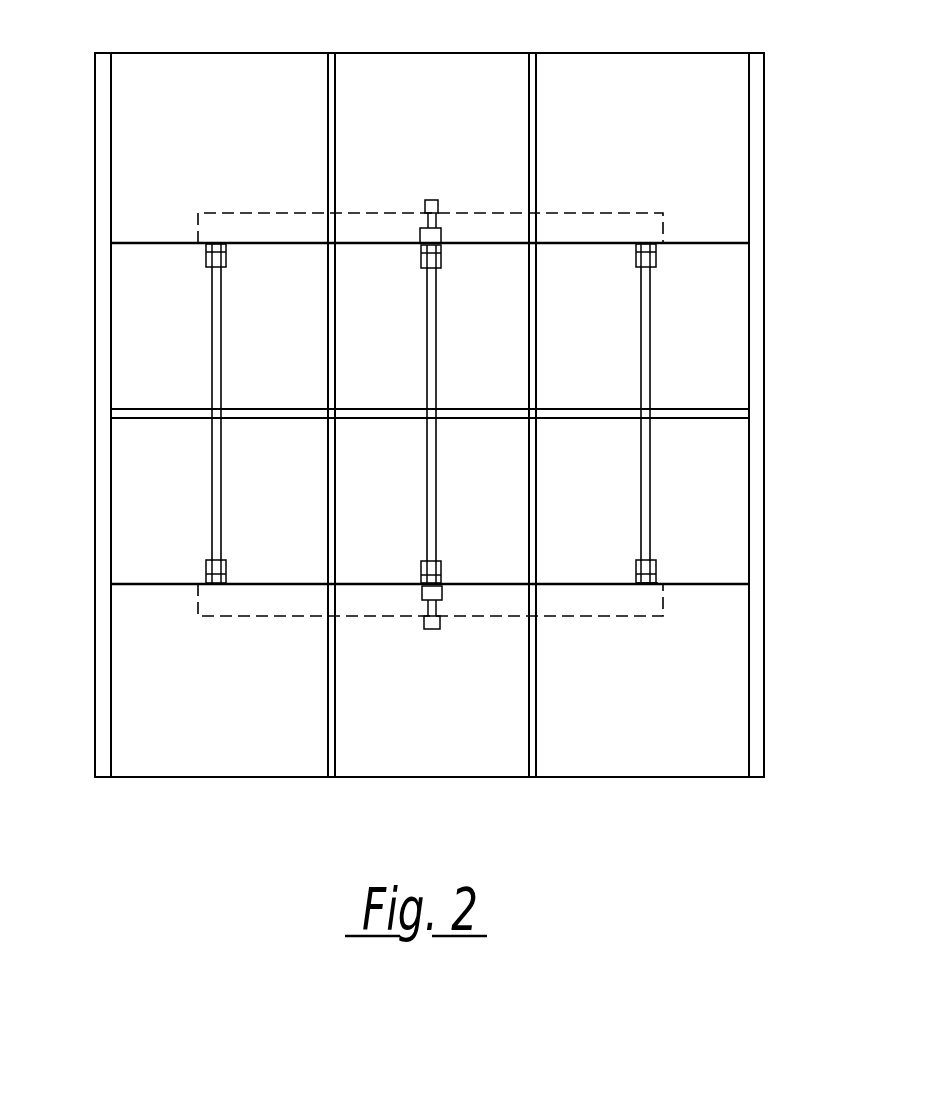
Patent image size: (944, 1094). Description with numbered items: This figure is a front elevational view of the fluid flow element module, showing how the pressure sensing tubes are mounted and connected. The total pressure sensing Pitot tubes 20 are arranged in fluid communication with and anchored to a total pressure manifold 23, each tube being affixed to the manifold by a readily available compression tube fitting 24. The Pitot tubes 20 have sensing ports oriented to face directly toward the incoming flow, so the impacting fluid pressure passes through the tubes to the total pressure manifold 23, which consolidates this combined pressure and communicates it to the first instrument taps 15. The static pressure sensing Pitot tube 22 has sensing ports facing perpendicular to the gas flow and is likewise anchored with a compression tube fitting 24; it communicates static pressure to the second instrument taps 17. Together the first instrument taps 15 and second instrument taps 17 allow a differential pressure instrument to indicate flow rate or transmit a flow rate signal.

The first instrument tap 15 is at (421, 200).
The second instrument tap 17 is at (448, 218).
The total pressure Pitot tube 20 is at (212, 360).
The static pressure Pitot tube 22 is at (434, 498).
The total pressure manifold 23 is at (632, 212).
The compression tube fitting 24 is at (658, 578).